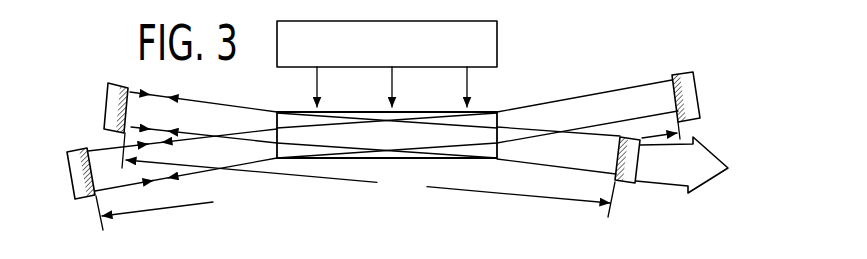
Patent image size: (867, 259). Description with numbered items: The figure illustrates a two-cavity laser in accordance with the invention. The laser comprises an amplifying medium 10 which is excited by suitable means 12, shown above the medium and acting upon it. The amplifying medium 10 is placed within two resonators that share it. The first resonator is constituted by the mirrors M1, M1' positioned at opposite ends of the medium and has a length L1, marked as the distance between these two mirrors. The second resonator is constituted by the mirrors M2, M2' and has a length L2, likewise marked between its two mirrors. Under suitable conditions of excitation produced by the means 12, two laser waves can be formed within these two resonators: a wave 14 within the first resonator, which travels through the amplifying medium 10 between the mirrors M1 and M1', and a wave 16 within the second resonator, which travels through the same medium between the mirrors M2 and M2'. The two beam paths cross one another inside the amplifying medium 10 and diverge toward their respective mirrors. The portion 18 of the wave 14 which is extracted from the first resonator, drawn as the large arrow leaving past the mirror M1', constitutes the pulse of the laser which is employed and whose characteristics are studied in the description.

The amplifying medium 10 is at (457, 158).
The suitable means 12 is at (397, 57).
The wave 14 is at (543, 152).
The wave 16 is at (580, 110).
The portion 18 is at (667, 170).
The mirror M1 is at (95, 122).
The mirror M2 is at (80, 200).
The mirror M1' is at (632, 180).
The mirror M2' is at (656, 88).
The length L1 is at (368, 181).
The length L2 is at (175, 200).